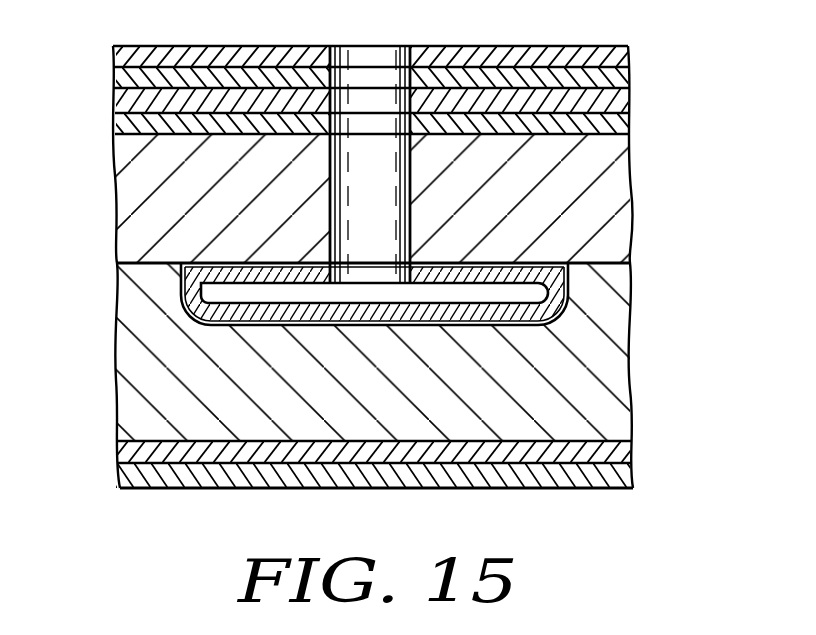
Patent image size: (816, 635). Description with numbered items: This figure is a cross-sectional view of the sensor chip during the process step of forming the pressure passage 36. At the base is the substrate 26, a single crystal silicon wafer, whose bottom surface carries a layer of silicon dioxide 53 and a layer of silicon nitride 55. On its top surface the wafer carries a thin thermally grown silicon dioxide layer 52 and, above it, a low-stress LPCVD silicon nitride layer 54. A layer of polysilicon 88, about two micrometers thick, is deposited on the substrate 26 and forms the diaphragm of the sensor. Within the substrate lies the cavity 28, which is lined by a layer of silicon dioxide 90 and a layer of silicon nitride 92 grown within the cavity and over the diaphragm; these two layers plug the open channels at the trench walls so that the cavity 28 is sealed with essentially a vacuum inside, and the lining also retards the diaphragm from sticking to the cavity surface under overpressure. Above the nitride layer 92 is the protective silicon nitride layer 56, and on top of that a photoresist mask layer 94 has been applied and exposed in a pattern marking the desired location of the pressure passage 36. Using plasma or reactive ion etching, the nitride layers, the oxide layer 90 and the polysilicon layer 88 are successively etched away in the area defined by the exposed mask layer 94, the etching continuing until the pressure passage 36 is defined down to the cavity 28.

The substrate 26 is at (605, 370).
The cavity 28 is at (242, 288).
The pressure passage 36 is at (372, 102).
The layer of silicon dioxide 52 is at (615, 123).
The layer of silicon dioxide 53 is at (620, 455).
The silicon nitride layer 54 is at (615, 100).
The layer of silicon nitride 55 is at (620, 475).
The protective layer 56 is at (620, 78).
The polysilicon layer 88 is at (605, 200).
The layer of silicon dioxide 90 is at (569, 288).
The silicon nitride layer 92 is at (560, 312).
The photoresist mask layer 94 is at (620, 55).